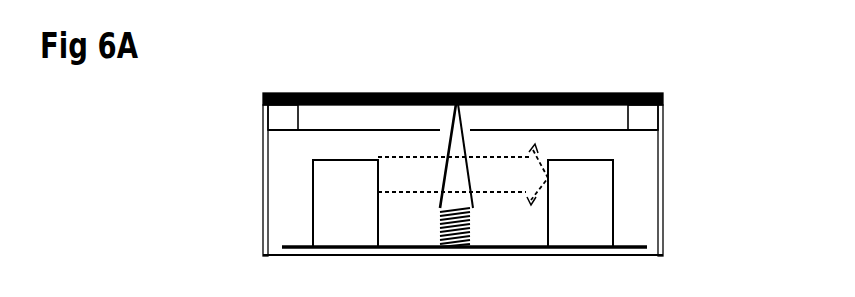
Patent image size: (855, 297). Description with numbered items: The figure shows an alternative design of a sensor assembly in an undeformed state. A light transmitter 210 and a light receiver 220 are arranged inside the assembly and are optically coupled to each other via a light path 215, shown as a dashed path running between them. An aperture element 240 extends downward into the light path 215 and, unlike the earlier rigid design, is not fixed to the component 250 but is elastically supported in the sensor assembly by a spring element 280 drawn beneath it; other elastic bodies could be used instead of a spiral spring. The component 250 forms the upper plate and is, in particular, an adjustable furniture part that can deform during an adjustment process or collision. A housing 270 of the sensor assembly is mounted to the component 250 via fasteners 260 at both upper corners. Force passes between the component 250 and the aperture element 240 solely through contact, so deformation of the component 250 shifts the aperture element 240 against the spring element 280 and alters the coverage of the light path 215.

The light transmitter 210 is at (345, 204).
The light path 215 is at (463, 174).
The light receiver 220 is at (580, 204).
The aperture element 240 is at (463, 133).
The component 250 is at (394, 93).
The fasteners 260 is at (280, 120).
The housing 270 is at (658, 195).
The coil 280 is at (470, 222).